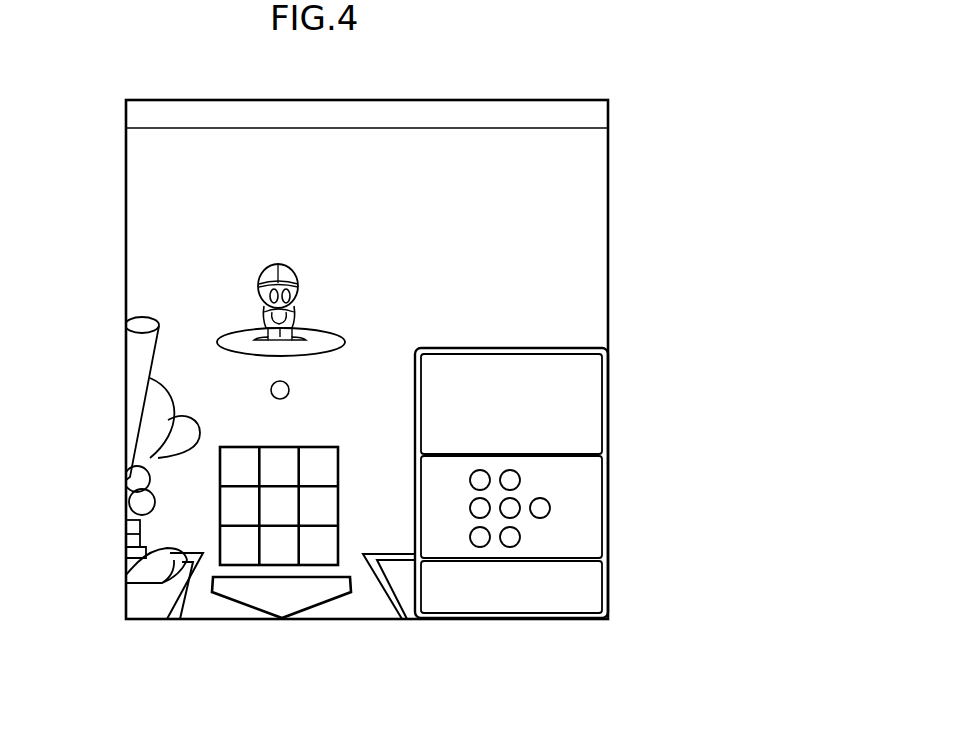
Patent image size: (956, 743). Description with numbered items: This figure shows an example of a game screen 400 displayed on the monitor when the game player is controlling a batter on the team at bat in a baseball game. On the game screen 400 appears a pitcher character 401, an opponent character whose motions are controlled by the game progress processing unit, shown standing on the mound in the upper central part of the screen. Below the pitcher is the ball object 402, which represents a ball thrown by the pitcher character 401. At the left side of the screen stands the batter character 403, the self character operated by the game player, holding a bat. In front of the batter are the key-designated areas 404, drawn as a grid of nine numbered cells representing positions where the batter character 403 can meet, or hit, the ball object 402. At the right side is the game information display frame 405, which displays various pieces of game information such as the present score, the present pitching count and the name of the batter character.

The game screen 400 is at (458, 93).
The pitcher character 401 is at (262, 277).
The ball object 402 is at (287, 382).
The batter character 403 is at (130, 490).
The key-designated areas 404 is at (340, 468).
The game information display frame 405 is at (528, 347).